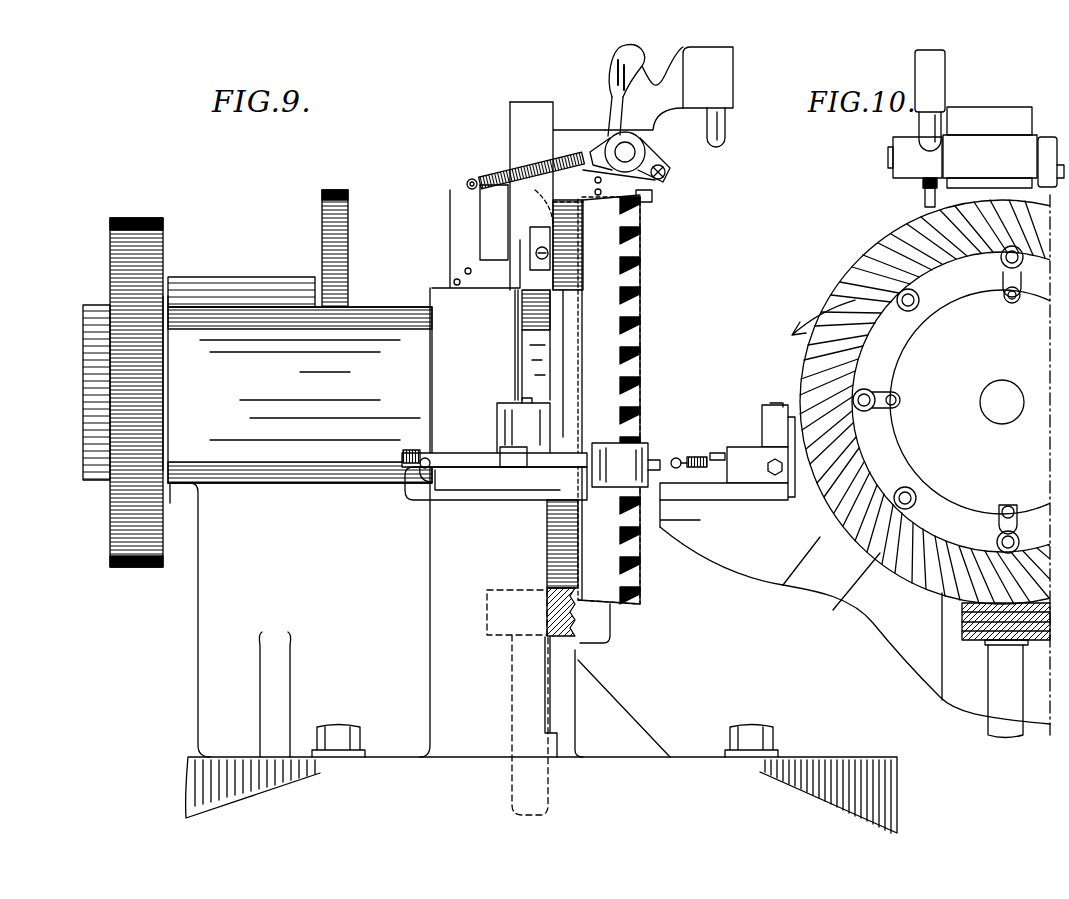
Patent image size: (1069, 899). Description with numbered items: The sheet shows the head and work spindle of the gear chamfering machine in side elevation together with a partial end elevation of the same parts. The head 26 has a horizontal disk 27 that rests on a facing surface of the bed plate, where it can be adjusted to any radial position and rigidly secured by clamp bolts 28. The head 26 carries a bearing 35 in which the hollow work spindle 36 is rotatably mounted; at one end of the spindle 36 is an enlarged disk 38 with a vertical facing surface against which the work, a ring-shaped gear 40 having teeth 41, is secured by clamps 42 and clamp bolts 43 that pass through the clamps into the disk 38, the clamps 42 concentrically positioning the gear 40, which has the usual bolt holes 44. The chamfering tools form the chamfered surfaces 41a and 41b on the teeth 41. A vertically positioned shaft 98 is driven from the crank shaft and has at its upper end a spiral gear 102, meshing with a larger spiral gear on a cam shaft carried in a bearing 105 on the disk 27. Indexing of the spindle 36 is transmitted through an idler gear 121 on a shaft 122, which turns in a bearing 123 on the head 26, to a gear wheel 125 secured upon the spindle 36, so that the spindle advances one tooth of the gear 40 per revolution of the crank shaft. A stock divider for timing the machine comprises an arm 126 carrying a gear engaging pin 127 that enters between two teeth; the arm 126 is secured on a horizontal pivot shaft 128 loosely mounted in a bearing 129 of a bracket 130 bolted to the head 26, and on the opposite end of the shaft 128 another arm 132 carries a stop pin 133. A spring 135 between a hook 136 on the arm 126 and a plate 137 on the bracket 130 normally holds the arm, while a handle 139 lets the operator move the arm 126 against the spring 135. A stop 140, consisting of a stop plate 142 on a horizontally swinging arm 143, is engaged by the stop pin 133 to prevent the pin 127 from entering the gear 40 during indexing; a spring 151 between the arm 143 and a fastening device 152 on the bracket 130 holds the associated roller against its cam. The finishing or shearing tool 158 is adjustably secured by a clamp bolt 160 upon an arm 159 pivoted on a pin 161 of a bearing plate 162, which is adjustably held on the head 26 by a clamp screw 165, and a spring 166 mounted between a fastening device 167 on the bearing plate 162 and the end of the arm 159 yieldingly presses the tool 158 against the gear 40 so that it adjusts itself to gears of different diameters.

In FIG. 9, the head 26 is at (205, 668).
In FIG. 10, the head 26 is at (888, 626).
In FIG. 9, the horizontal disk 27 is at (897, 783).
In FIG. 9, the clamp bolts 28 is at (361, 735).
In FIG. 9, the bearing 35 is at (384, 307).
In FIG. 9, the work spindle 36 is at (518, 333).
In FIG. 10, the work spindle 36 is at (983, 398).
In FIG. 9, the enlarged disk 38 is at (560, 285).
In FIG. 9, the gear 40 is at (612, 292).
In FIG. 10, the gear 40 is at (803, 340).
In FIG. 10, the teeth 41 is at (855, 285).
In FIG. 10, the chamfered surface 41a is at (1016, 300).
In FIG. 10, the chamfered surface 41b is at (890, 240).
In FIG. 10, the clamps 42 is at (1006, 268).
In FIG. 10, the clamp bolts 43 is at (902, 400).
In FIG. 10, the bolt holes 44 is at (916, 306).
In FIG. 9, the vertical shaft 98 is at (550, 706).
In FIG. 10, the vertical shaft 98 is at (990, 738).
In FIG. 9, the spiral gear 102 is at (578, 636).
In FIG. 10, the spiral gear 102 is at (985, 638).
In FIG. 9, the bearing 105 is at (590, 650).
In FIG. 9, the idler gear 121 is at (345, 191).
In FIG. 9, the shaft 122 is at (166, 276).
In FIG. 9, the bearing 123 is at (231, 277).
In FIG. 9, the gear wheel 125 is at (100, 305).
In FIG. 9, the arm 126 is at (733, 84).
In FIG. 10, the arm 126 is at (946, 73).
In FIG. 9, the gear engaging pin 127 is at (725, 138).
In FIG. 10, the gear engaging pin 127 is at (925, 138).
In FIG. 9, the pivot shaft 128 is at (632, 149).
In FIG. 10, the pivot shaft 128 is at (892, 163).
In FIG. 9, the bearing 129 is at (614, 97).
In FIG. 10, the bearing 129 is at (969, 134).
In FIG. 9, the bracket 130 is at (510, 133).
In FIG. 10, the bracket 130 is at (1022, 104).
In FIG. 9, the arm 132 is at (651, 168).
In FIG. 10, the arm 132 is at (1047, 146).
In FIG. 9, the stop pin 133 is at (667, 172).
In FIG. 10, the stop pin 133 is at (1061, 165).
In FIG. 9, the spring 135 is at (502, 168).
In FIG. 10, the spring 135 is at (922, 186).
In FIG. 9, the hook 136 is at (597, 150).
In FIG. 9, the plate 137 is at (467, 185).
In FIG. 10, the plate 137 is at (925, 203).
In FIG. 9, the handle 139 is at (614, 60).
In FIG. 9, the stop 140 is at (660, 193).
In FIG. 9, the stop plate 142 is at (652, 205).
In FIG. 9, the arm 143 is at (553, 190).
In FIG. 9, the spring 151 is at (538, 247).
In FIG. 9, the fastening device 152 is at (536, 254).
In FIG. 9, the finishing tool 158 is at (638, 427).
In FIG. 10, the finishing tool 158 is at (770, 405).
In FIG. 9, the arm 159 is at (470, 452).
In FIG. 10, the arm 159 is at (748, 452).
In FIG. 9, the clamp bolt 160 is at (656, 463).
In FIG. 10, the clamp bolt 160 is at (774, 474).
In FIG. 9, the pin 161 is at (526, 400).
In FIG. 10, the pin 161 is at (778, 402).
In FIG. 9, the bearing plate 162 is at (445, 490).
In FIG. 10, the bearing plate 162 is at (700, 500).
In FIG. 9, the clamp screw 165 is at (510, 448).
In FIG. 9, the spring 166 is at (410, 464).
In FIG. 10, the spring 166 is at (696, 458).
In FIG. 9, the fastening device 167 is at (425, 472).
In FIG. 10, the fastening device 167 is at (680, 460).